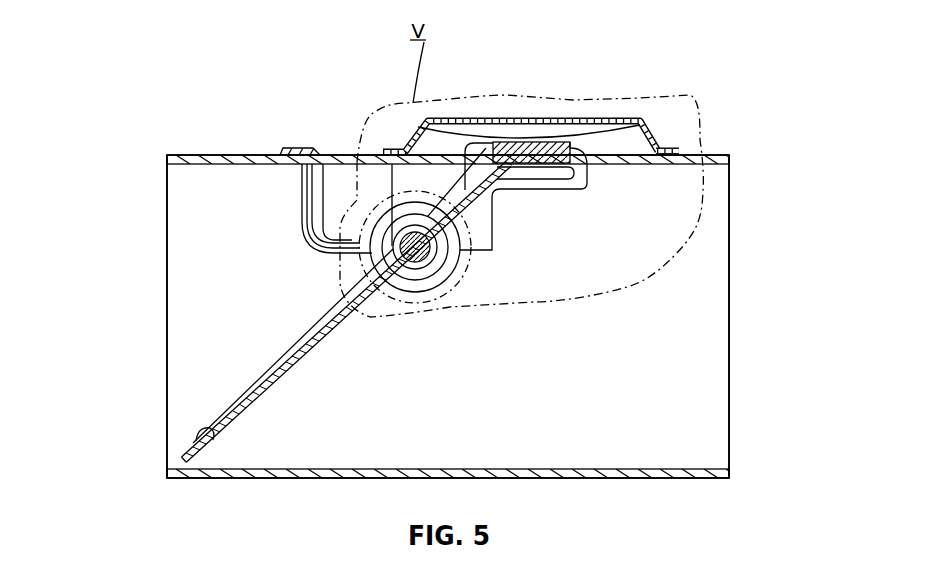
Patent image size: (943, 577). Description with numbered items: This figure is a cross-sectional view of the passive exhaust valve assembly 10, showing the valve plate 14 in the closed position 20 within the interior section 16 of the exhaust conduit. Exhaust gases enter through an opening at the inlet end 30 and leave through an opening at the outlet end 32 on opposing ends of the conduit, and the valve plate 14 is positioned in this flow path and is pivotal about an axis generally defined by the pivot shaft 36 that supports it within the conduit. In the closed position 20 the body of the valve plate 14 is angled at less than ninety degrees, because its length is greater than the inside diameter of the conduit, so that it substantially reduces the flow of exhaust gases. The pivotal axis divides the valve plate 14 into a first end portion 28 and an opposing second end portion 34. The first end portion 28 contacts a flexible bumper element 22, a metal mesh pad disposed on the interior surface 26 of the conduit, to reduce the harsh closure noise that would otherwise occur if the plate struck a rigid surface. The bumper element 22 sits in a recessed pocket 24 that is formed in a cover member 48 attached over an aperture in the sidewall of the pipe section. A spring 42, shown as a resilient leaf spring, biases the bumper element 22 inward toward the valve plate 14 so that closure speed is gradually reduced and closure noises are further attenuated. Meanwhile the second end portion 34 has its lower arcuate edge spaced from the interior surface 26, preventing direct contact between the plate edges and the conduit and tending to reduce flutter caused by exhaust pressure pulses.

The passive exhaust valve assembly 10 is at (143, 133).
The valve plate 14 is at (237, 395).
The interior section 16 is at (690, 402).
The closed position 20 is at (193, 232).
The bumper element 22 is at (523, 137).
The recessed pocket 24 is at (548, 117).
The interior surface 26 is at (552, 470).
The first end portion 28 is at (527, 173).
The inlet end 30 is at (747, 310).
The outlet end 32 is at (147, 307).
The second end portion 34 is at (217, 442).
The pivot shaft 36 is at (425, 253).
The spring 42 is at (590, 130).
The cover member 48 is at (647, 123).